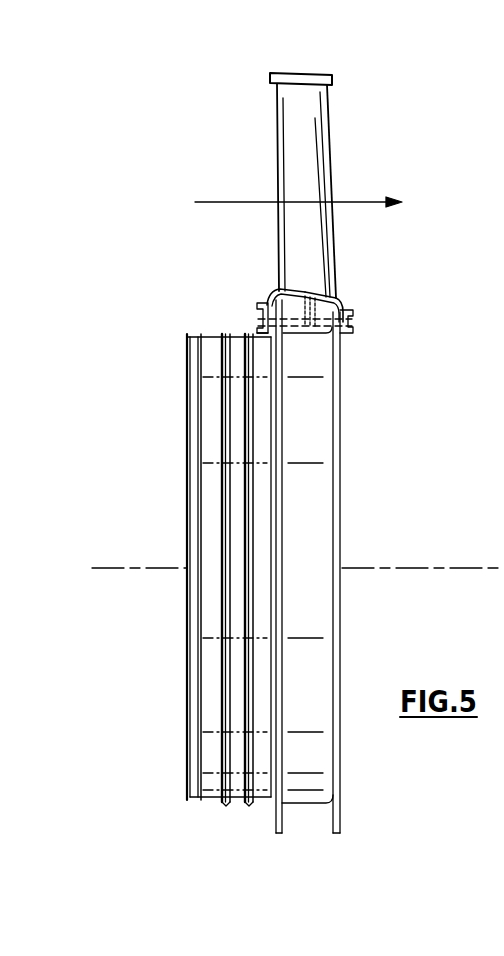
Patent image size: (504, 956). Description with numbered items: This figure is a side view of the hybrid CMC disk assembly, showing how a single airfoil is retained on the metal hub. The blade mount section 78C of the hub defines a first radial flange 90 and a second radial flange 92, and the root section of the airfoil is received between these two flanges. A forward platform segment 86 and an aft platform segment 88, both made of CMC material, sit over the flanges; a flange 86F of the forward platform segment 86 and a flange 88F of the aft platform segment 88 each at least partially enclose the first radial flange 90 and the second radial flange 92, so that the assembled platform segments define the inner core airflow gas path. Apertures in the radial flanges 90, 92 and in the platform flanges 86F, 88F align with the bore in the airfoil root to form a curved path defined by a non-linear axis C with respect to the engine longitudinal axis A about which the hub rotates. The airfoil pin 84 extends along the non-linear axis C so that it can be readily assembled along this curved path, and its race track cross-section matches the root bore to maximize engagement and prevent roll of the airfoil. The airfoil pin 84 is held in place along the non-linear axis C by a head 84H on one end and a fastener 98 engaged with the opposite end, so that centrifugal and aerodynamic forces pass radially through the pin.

The blade mount section 78C is at (306, 424).
The airfoil pin 84 is at (300, 335).
The head 84H is at (262, 322).
The forward platform segment 86 is at (261, 280).
The flange 86F is at (260, 332).
The aft platform segment 88 is at (335, 280).
The flange 88F is at (343, 341).
The first radial flange 90 is at (272, 490).
The second radial flange 92 is at (333, 457).
The fastener 98 is at (355, 320).
The engine longitudinal axis A is at (428, 569).
The non-linear axis C is at (232, 202).